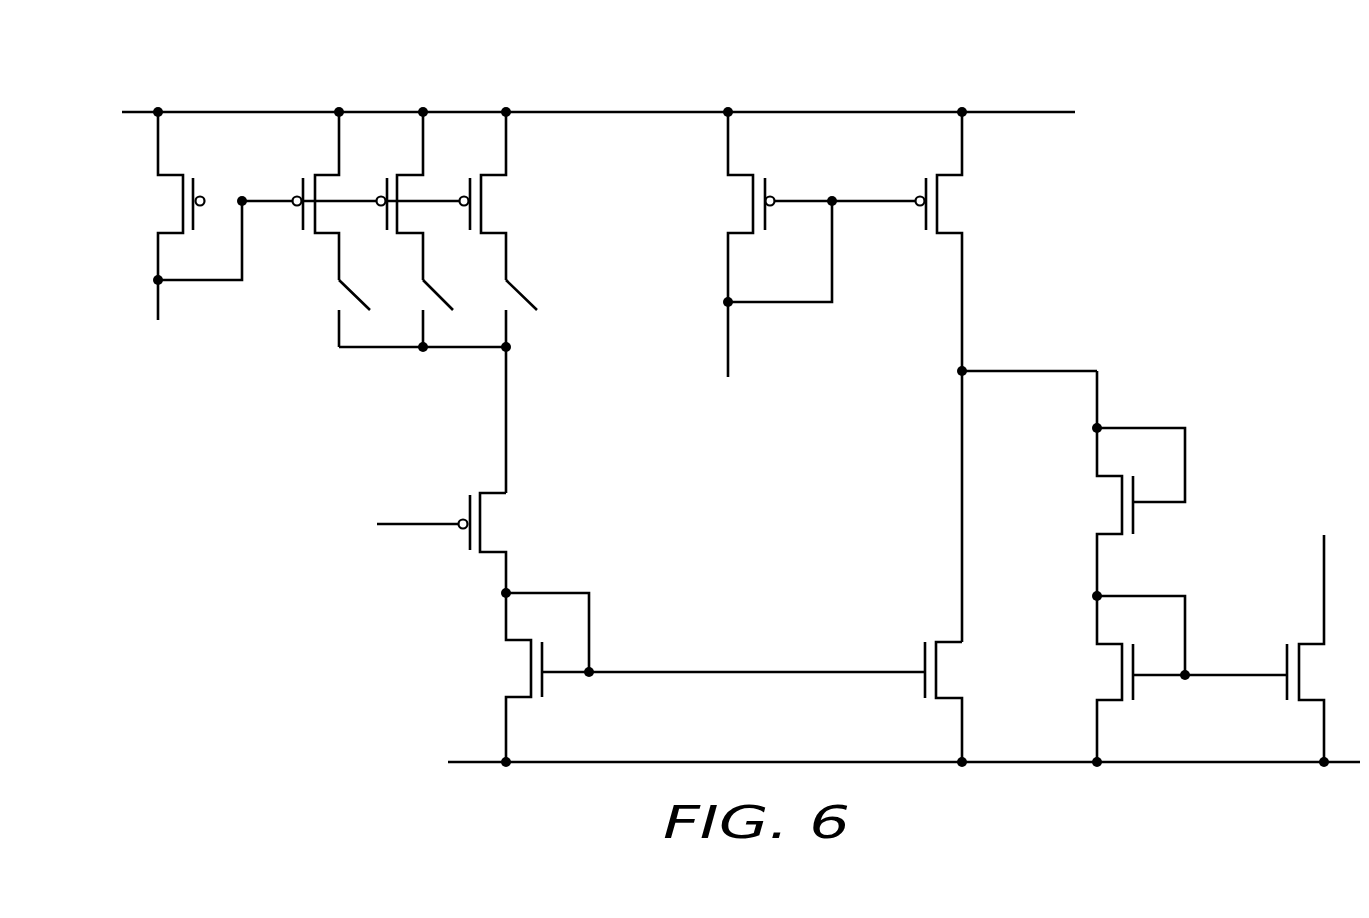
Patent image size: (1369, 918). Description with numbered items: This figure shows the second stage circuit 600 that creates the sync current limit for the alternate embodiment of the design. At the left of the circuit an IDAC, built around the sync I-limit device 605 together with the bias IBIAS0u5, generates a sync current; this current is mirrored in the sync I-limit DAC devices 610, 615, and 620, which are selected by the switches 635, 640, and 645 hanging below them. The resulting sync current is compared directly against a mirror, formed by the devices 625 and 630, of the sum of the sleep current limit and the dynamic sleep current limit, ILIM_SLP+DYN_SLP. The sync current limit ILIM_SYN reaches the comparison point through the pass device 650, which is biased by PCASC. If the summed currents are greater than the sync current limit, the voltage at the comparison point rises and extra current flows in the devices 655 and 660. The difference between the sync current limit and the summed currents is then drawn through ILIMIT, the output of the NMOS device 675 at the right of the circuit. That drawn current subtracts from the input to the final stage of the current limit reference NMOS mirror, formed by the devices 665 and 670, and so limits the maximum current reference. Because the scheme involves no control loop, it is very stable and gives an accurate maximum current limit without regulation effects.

The second stage circuit 600 is at (267, 60).
The sync I-limit device 605 is at (173, 169).
The sync I-limit DAC device 610 is at (345, 185).
The sync I-limit DAC device 615 is at (428, 186).
The sync I-limit DAC device 620 is at (512, 186).
The mirror device 625 is at (713, 187).
The mirror device 630 is at (983, 187).
The switch 635 is at (340, 290).
The switch 640 is at (423, 290).
The switch 645 is at (506, 290).
The pass device 650 is at (527, 503).
The device 655 is at (490, 698).
The device 660 is at (946, 705).
The current limit reference NMOS mirror device 665 is at (1075, 485).
The current limit reference NMOS mirror device 670 is at (1111, 706).
The NMOS device 675 is at (1304, 633).